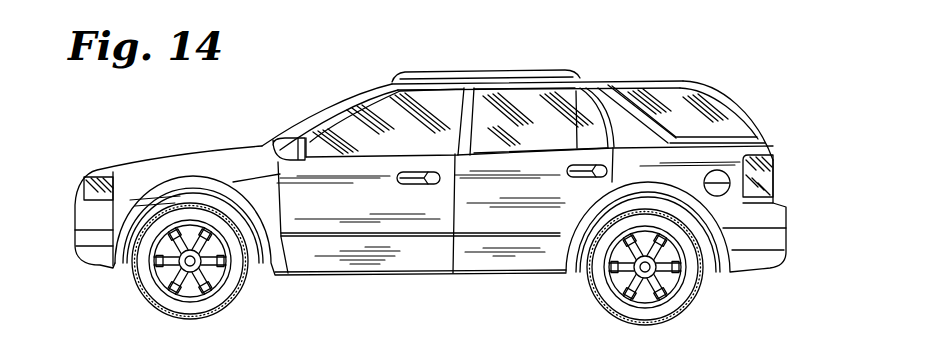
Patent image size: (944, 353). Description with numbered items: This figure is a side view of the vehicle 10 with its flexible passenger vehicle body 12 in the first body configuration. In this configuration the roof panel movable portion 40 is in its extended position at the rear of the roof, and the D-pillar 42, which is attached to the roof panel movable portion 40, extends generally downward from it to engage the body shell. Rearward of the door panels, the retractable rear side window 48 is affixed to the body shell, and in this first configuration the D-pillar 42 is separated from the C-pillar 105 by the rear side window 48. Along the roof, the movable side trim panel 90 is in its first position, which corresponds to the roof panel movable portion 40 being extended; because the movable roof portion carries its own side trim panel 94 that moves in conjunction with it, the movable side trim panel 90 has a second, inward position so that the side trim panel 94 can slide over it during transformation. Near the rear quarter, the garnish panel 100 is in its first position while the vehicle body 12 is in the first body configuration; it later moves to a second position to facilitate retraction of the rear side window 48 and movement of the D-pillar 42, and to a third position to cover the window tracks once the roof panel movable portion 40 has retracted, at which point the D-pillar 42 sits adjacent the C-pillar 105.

The vehicle 10 is at (327, 72).
The flexible passenger vehicle body 12 is at (212, 142).
The roof panel movable portion 40 is at (622, 82).
The D-pillar 42 is at (727, 112).
The rear side window 48 is at (702, 90).
The movable side trim panel 90 is at (495, 76).
The side trim panel 94 is at (667, 82).
The garnish panel 100 is at (734, 134).
The C-pillar 105 is at (581, 95).